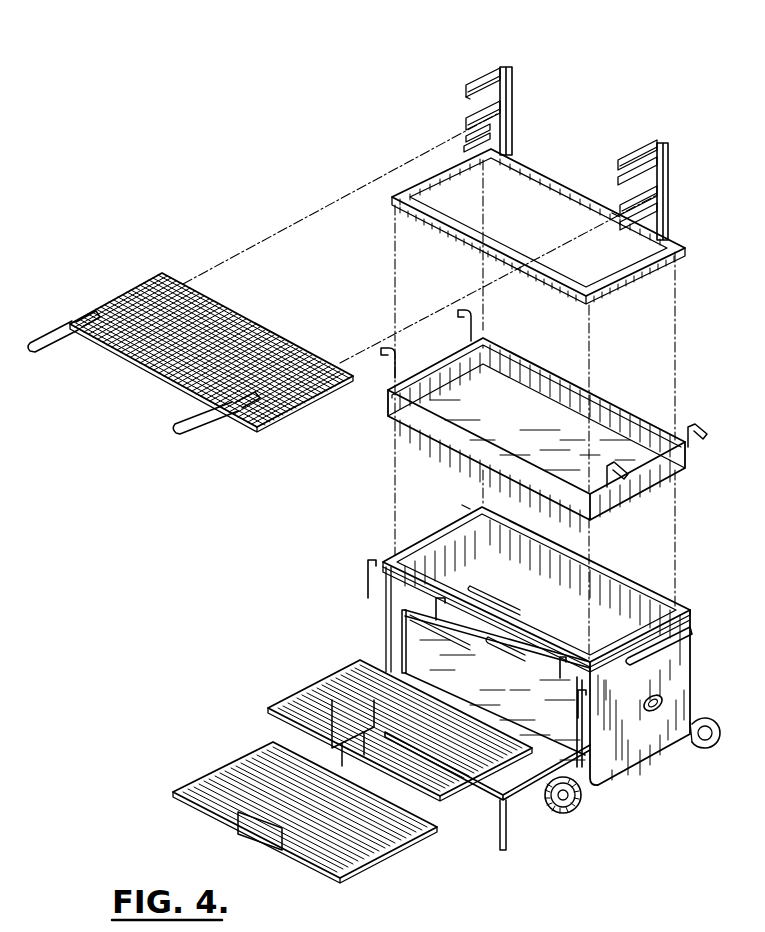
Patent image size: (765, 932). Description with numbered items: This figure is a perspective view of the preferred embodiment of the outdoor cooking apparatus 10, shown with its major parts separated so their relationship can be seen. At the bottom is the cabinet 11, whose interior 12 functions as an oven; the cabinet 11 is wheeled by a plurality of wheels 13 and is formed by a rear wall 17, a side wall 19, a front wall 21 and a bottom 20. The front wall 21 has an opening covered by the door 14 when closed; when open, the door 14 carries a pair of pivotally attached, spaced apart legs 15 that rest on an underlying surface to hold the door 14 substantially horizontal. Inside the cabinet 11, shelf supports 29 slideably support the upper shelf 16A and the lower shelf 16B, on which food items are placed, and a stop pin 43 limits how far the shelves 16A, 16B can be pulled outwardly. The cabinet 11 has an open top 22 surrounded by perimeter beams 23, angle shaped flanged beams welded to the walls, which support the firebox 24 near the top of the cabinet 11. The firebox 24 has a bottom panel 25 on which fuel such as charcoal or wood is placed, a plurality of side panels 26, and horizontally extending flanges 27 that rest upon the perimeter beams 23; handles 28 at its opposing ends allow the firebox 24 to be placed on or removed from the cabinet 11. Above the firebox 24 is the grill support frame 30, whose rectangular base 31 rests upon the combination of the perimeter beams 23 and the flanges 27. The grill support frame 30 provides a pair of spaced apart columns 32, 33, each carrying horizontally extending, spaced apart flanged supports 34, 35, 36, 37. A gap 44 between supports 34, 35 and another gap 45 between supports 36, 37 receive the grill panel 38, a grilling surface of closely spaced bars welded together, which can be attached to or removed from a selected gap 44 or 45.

The outdoor cooking apparatus 10 is at (258, 62).
The cabinet 11 is at (690, 667).
The interior 12 is at (560, 610).
The wheels 13 is at (572, 812).
The door 14 is at (480, 790).
The legs 15 is at (508, 832).
The upper shelf 16A is at (322, 678).
The lower shelf 16B is at (213, 782).
The rear wall 17 is at (626, 600).
The side wall 19 is at (640, 766).
The bottom 20 is at (477, 690).
The front wall 21 is at (383, 620).
The open top 22 is at (462, 503).
The perimeter beams 23 is at (530, 541).
The firebox 24 is at (491, 410).
The bottom panel 25 is at (543, 405).
The side panels 26 is at (470, 345).
The flanges 27 is at (628, 411).
The handles 28 is at (462, 311).
The shelf supports 29 is at (478, 590).
The grill support frame 30 is at (512, 98).
The rectangular base 31 is at (650, 270).
The column 32 is at (508, 68).
The column 33 is at (666, 147).
The flanged support 34 is at (470, 84).
The flanged support 35 is at (464, 114).
The flanged support 36 is at (464, 132).
The flanged support 37 is at (466, 146).
The grill panel 38 is at (148, 278).
The stop pin 43 is at (369, 565).
The gap 44 is at (463, 99).
The gap 45 is at (616, 216).